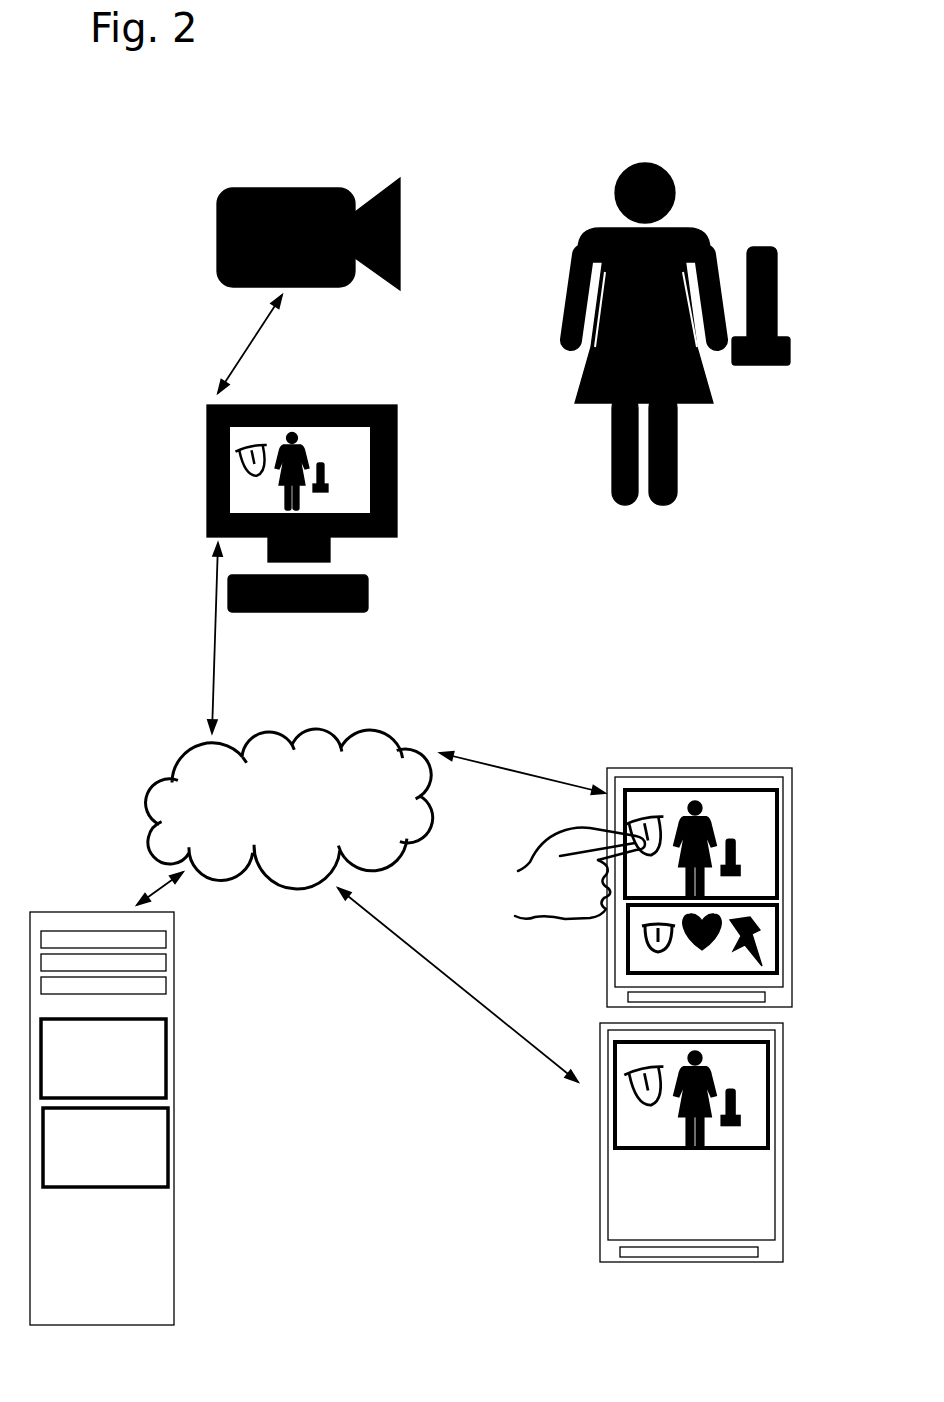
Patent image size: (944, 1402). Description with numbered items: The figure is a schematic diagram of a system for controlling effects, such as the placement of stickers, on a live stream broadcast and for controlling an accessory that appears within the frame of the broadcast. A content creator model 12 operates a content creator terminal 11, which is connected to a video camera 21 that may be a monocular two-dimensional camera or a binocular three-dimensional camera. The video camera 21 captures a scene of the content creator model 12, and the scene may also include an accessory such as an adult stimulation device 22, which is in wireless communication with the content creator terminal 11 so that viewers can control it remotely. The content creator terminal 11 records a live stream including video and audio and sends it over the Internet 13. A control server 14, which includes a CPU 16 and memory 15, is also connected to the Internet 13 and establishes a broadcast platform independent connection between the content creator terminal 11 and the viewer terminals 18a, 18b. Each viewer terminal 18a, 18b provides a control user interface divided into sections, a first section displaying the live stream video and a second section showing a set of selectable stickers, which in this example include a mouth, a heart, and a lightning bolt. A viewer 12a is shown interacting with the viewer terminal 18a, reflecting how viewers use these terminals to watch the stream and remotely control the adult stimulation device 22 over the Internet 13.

The content creator terminal 11 is at (382, 600).
The content creator model 12 is at (688, 488).
The first viewer 12a is at (560, 905).
The Internet 13 is at (360, 848).
The control server 14 is at (113, 1149).
The memory 15 is at (151, 1084).
The CPU 16 is at (151, 1172).
The viewer terminal 18a is at (795, 985).
The viewer terminal 18b is at (798, 1238).
The video camera 21 is at (335, 295).
The adult stimulation device 22 is at (797, 355).